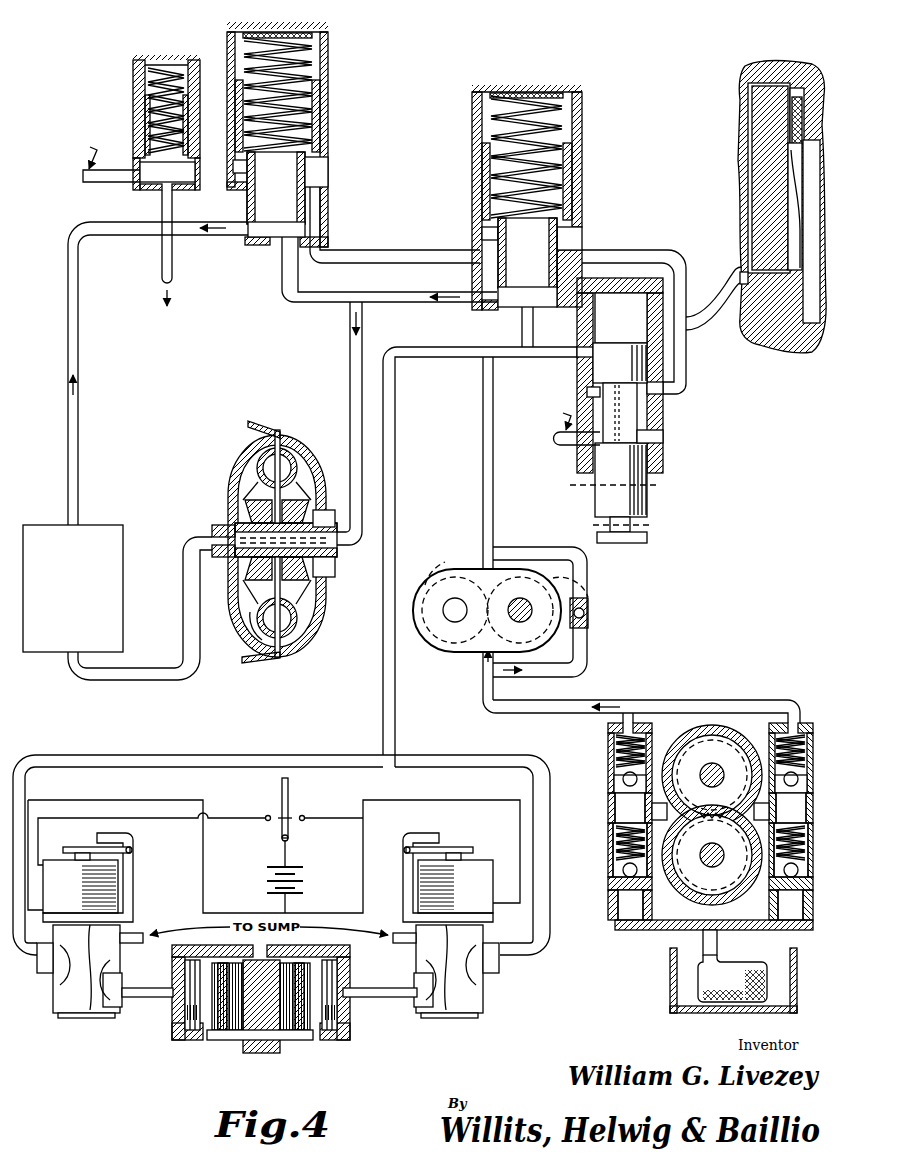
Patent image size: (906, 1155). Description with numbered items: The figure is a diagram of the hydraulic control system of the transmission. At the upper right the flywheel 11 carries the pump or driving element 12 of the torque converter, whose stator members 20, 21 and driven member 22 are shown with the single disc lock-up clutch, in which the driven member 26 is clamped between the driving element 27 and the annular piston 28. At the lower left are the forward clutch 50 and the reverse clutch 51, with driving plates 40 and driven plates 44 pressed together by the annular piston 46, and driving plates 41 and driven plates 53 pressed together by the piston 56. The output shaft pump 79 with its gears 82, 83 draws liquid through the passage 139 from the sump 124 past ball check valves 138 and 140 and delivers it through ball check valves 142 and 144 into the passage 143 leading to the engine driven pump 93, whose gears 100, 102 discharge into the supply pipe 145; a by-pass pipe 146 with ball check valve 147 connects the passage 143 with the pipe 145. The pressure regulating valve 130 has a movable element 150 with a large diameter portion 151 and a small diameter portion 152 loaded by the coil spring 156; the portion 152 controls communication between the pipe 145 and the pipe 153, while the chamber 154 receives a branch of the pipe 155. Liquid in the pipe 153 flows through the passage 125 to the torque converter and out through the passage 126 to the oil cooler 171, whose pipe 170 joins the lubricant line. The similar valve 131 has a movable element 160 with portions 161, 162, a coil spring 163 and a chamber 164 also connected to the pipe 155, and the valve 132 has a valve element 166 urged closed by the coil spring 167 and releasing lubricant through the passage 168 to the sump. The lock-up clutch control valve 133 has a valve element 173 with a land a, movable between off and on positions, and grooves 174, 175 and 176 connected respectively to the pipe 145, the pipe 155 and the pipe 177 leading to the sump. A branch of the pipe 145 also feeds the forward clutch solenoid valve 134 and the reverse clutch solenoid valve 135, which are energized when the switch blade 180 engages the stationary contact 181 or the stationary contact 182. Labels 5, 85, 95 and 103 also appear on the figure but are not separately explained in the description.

The valve stem detent 5 is at (645, 508).
The flywheel 11 is at (758, 190).
The pump or driving element 12 is at (271, 552).
The stator member 20 is at (297, 491).
The stator member 21 is at (243, 505).
The driven member 22 is at (256, 634).
The driven member of lock-up clutch 26 is at (795, 205).
The driving element 27 is at (808, 64).
The piston 28 is at (762, 125).
The driving plates 40 is at (228, 1030).
The driving plates 41 is at (292, 1032).
The driven plates 44 is at (258, 1042).
The annular piston 46 is at (190, 1012).
The forward clutch 50 is at (187, 1016).
The reverse clutch 51 is at (342, 1018).
The driven plates 53 is at (303, 1041).
The piston 56 is at (332, 1011).
The output shaft pump 79 is at (687, 835).
The gear 82 is at (680, 760).
The gear 83 is at (680, 888).
The pump gear shaft 85 is at (711, 855).
The engine driven pump 93 is at (450, 657).
The pump gear 95 is at (530, 620).
The gear 100 is at (511, 530).
The gear 102 is at (432, 570).
The pump gear 103 is at (450, 620).
The sump 124 is at (672, 985).
The passage 125 is at (352, 412).
The passage 126 is at (190, 538).
The pressure regulating valve 130 is at (536, 197).
The pressure regulating valve 131 is at (307, 134).
The pressure regulating valve 132 is at (136, 162).
The lock-up clutch control valve 133 is at (618, 410).
The forward clutch solenoid valve 134 is at (72, 1015).
The reverse clutch solenoid valve 135 is at (455, 1008).
The ball check valve 138 is at (626, 870).
The passage 139 is at (703, 940).
The ball check valve 140 is at (790, 885).
The ball check valve 142 is at (628, 779).
The passage 143 is at (540, 714).
The ball check valve 144 is at (786, 748).
The supply pipe 145 is at (397, 462).
The by-pass pipe 146 is at (567, 612).
The ball check valve 147 is at (589, 615).
The movable element 150 is at (485, 162).
The upper end portion 151 is at (484, 196).
The lower end portion 152 is at (497, 265).
The pipe 153 is at (390, 297).
The chamber 154 is at (570, 236).
The pipe 155 is at (372, 250).
The coil spring 156 is at (492, 115).
The movable element 160 is at (322, 100).
The portion of relatively large diameter 161 is at (322, 82).
The portion of relatively small diameter 162 is at (306, 200).
The coil spring 163 is at (300, 50).
The chamber 164 is at (313, 170).
The movable valve element 166 is at (145, 112).
The coil spring 167 is at (180, 65).
The passage 168 is at (100, 180).
The pipe 170 is at (80, 356).
The oil cooler 171 is at (88, 545).
The valve element 173 is at (638, 486).
The groove 174 is at (652, 356).
The groove 175 is at (587, 392).
The groove 176 is at (650, 438).
The pipe 177 is at (570, 446).
The switch blade 180 is at (274, 840).
The stationary contact 181 is at (266, 815).
The stationary contact 182 is at (304, 816).
The land a is at (622, 345).